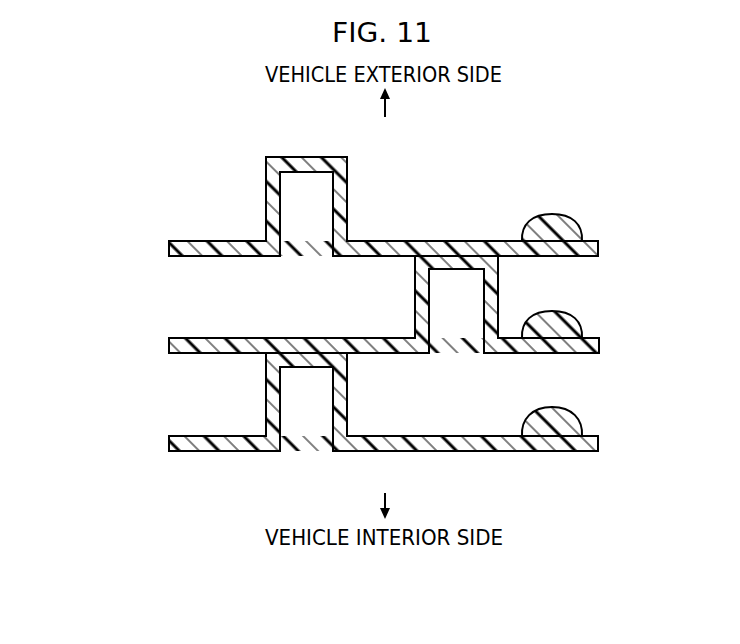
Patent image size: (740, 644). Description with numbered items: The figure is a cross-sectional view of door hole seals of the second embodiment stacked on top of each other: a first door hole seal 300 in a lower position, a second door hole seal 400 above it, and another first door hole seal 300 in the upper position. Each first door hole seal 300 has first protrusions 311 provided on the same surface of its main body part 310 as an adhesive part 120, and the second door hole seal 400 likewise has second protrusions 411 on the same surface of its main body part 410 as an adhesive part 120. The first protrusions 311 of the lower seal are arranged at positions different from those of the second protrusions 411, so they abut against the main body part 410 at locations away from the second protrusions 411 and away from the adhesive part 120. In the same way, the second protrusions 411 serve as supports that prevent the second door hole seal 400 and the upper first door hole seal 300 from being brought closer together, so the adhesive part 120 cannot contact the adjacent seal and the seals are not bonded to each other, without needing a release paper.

The adhesive part 120 is at (552, 214).
The first door hole seal 300 is at (342, 295).
The main body part 310 is at (220, 246).
The first protrusions 311 is at (343, 201).
The second door hole seal 400 is at (343, 294).
The main body part 410 is at (220, 338).
The second protrusions 411 is at (418, 298).